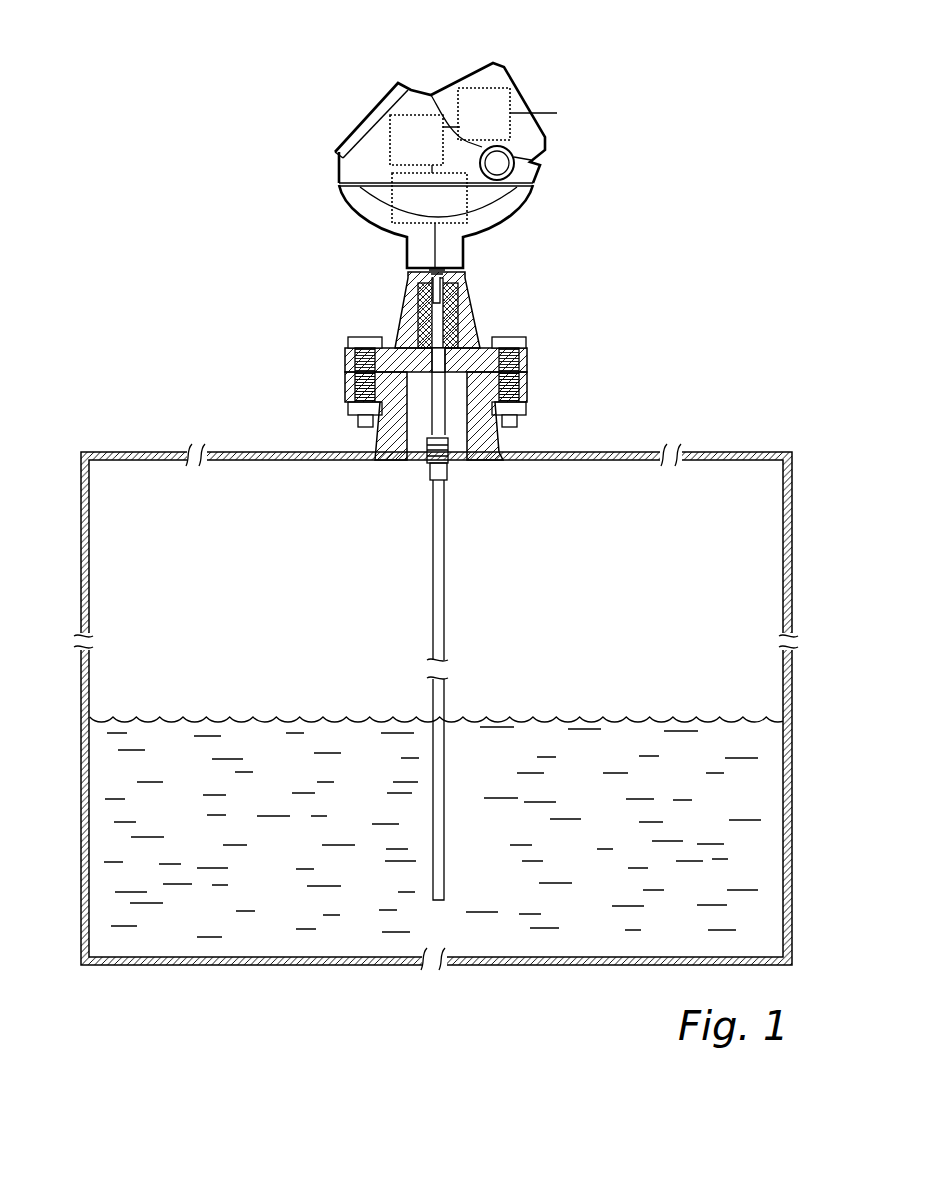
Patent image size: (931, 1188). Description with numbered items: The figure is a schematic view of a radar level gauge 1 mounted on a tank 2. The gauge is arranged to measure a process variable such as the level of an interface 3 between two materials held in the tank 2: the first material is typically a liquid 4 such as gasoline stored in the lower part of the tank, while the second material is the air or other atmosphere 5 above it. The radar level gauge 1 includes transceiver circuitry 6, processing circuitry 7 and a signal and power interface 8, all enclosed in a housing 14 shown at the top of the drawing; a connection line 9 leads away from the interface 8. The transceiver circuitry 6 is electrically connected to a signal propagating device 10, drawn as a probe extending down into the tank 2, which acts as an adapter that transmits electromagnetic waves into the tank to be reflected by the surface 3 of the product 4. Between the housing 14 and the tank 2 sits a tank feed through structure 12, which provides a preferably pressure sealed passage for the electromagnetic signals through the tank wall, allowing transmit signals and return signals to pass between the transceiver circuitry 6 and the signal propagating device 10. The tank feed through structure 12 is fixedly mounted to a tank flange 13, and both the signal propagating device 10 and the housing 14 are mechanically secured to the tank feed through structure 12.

The radar level gauge 1 is at (598, 105).
The tank 2 is at (594, 450).
The interface 3 is at (215, 716).
The liquid 4 is at (292, 853).
The atmosphere 5 is at (296, 590).
The transceiver circuitry 6 is at (390, 215).
The processing circuitry 7 is at (390, 143).
The signal and power interface 8 is at (490, 88).
The communication line 9 is at (552, 110).
The signal propagating device 10 is at (440, 597).
The tank feed through structure 12 is at (494, 297).
The tank flange 13 is at (498, 444).
The housing 14 is at (515, 213).